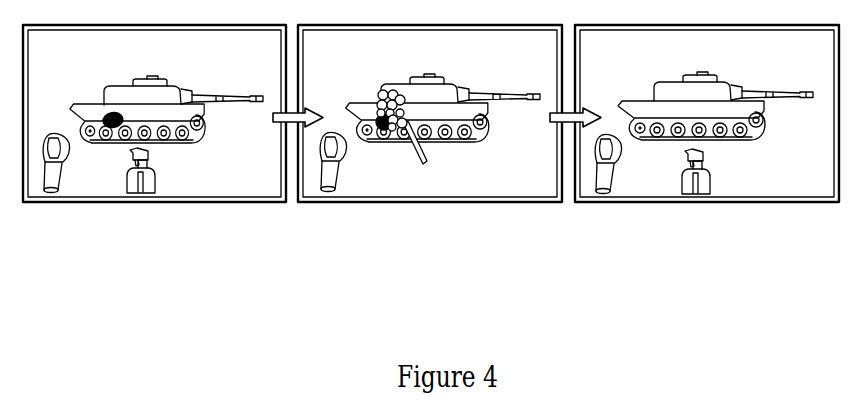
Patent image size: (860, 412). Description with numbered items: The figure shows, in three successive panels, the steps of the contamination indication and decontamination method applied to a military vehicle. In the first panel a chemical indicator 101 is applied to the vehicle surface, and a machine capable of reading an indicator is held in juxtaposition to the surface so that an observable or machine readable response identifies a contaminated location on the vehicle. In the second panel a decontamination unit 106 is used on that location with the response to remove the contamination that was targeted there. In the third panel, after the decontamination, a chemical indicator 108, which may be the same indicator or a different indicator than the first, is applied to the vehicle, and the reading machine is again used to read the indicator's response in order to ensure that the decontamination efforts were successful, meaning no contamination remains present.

The chemical indicator 101 is at (153, 184).
The decontamination unit 106 is at (424, 164).
The chemical indicator 108 is at (708, 185).